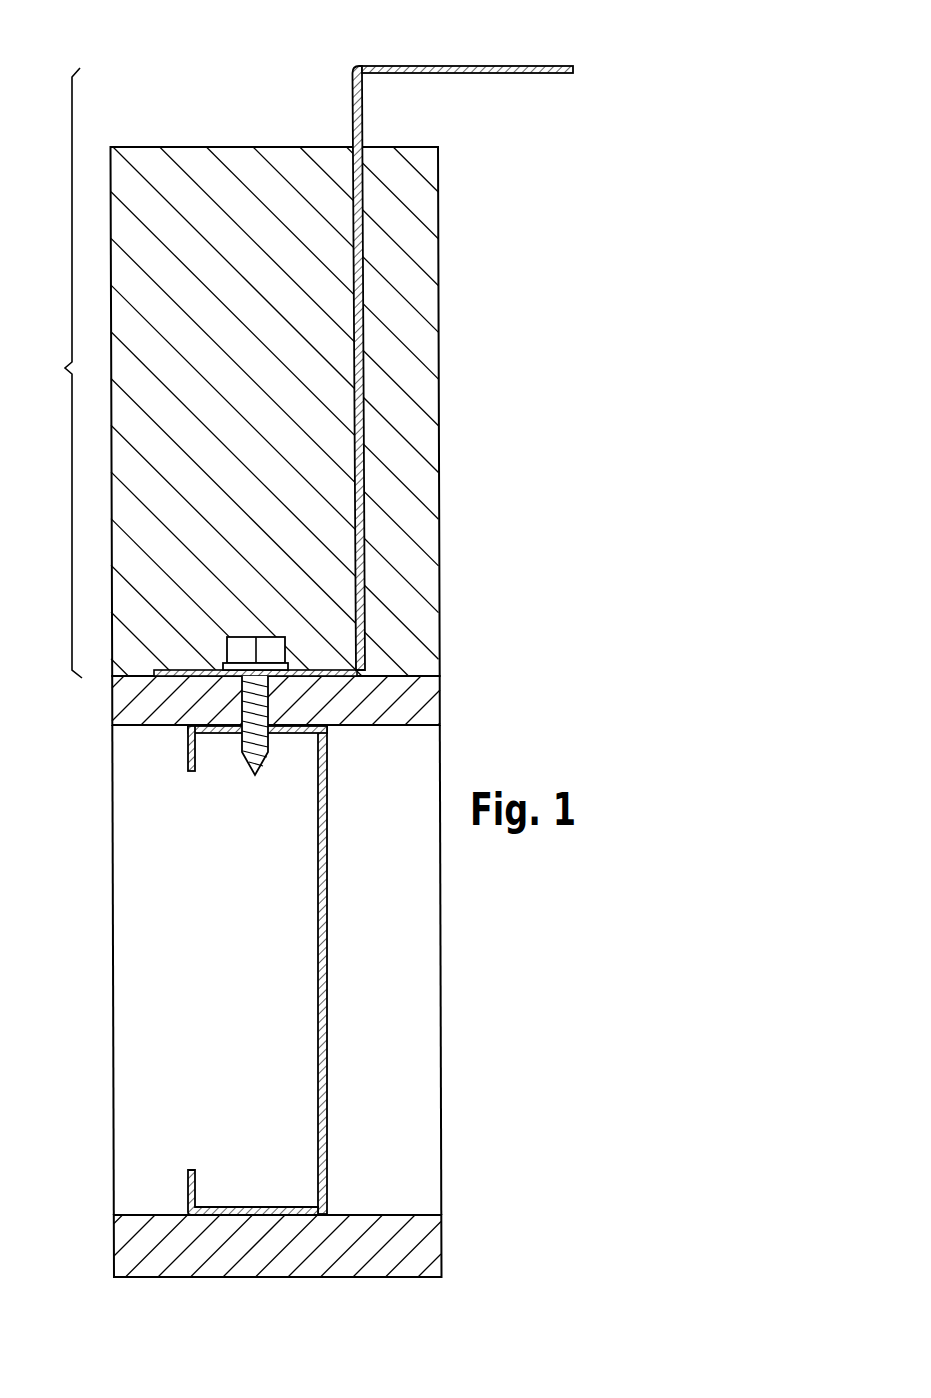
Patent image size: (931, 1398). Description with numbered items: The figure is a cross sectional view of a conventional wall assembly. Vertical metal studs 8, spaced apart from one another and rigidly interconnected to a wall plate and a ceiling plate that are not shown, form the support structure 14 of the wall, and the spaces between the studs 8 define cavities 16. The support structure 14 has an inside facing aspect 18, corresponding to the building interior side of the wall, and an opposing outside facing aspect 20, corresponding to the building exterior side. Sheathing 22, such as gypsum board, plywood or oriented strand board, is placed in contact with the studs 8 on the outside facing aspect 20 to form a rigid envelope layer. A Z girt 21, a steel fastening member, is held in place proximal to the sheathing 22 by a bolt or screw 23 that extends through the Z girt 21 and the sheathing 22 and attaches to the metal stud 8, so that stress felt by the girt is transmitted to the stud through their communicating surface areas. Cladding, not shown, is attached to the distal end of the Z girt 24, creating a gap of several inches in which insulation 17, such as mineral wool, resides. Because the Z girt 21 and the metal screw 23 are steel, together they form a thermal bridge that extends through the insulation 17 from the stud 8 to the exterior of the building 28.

The wall stud 8 is at (288, 956).
The support structure 14 is at (327, 1150).
The cavity 16 is at (228, 969).
The insulation 17 is at (439, 400).
The inside facing aspect 18 is at (217, 1218).
The outside facing aspect 20 is at (307, 720).
The Z girt 21 is at (365, 505).
The sheathing 22 is at (112, 702).
The screw 23 is at (255, 775).
The distal end of the Z girt 24 is at (466, 66).
The exterior of the building 28 is at (192, 60).